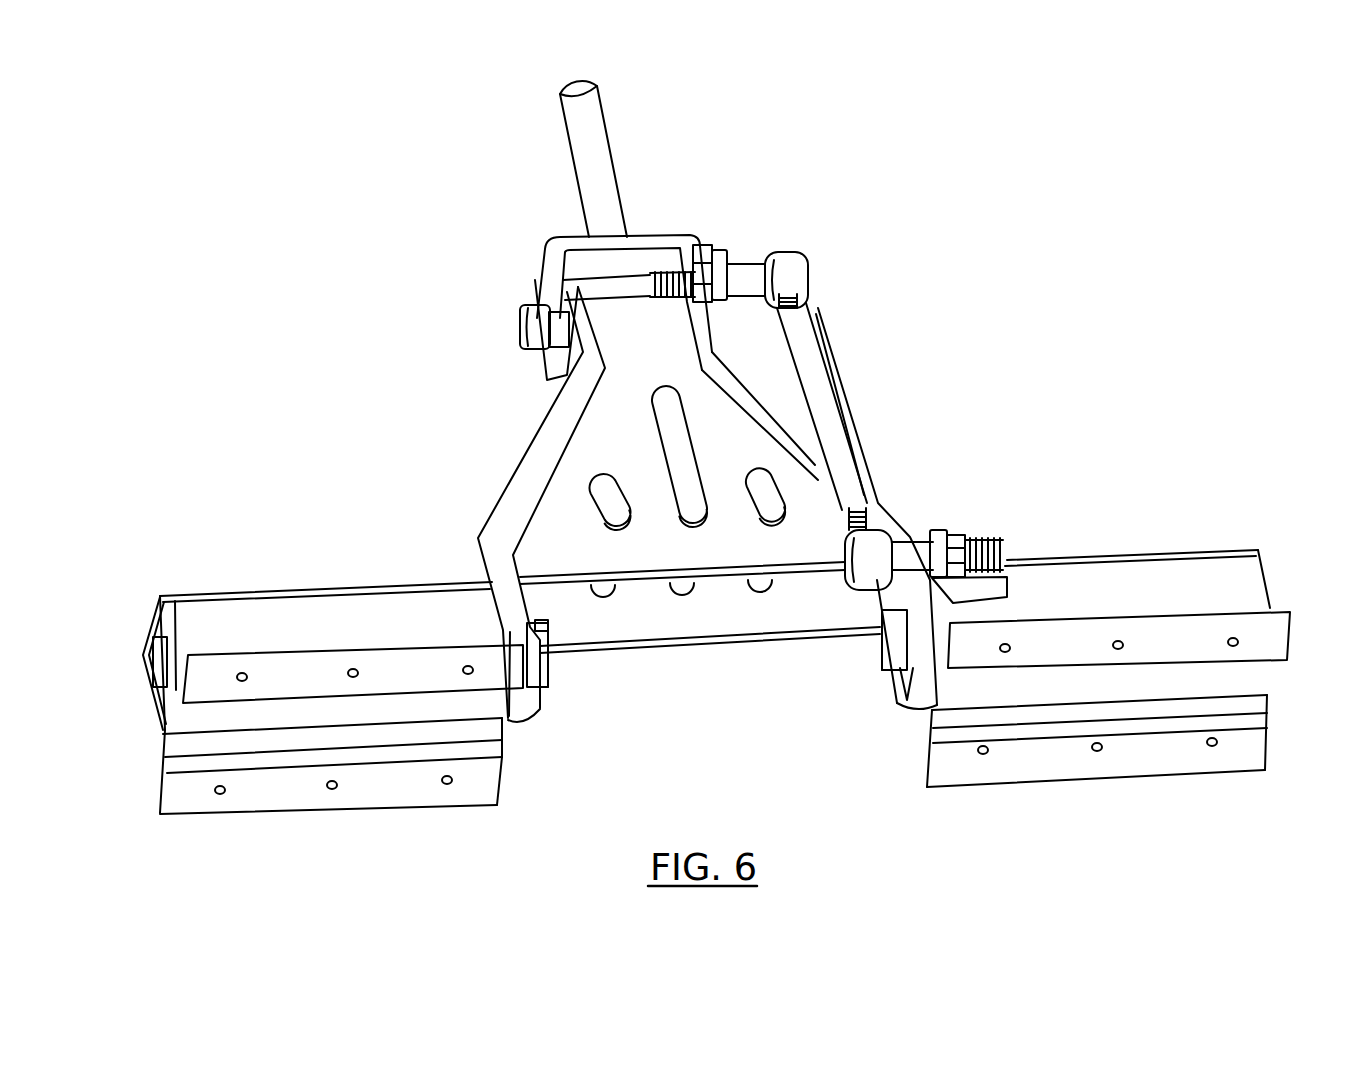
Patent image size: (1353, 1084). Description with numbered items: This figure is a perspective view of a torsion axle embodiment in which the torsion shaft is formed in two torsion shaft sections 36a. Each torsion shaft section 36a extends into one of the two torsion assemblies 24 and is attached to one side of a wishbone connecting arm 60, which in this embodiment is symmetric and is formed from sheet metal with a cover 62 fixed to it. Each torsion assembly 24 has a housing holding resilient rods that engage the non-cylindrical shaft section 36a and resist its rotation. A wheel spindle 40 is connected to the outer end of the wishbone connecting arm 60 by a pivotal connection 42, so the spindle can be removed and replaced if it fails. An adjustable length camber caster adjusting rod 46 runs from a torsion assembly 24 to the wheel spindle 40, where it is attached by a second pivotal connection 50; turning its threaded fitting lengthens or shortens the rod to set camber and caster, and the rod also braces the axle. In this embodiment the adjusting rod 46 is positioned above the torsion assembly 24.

The torsion assembly 24 is at (208, 553).
The torsion shaft section 36a is at (550, 672).
The wheel spindle 40 is at (595, 153).
The pivotal connection 42 is at (520, 326).
The camber caster adjusting rod 46 is at (828, 388).
The second pivotal connection 50 is at (748, 228).
The wishbone connecting arm 60 is at (534, 428).
The cover 62 is at (568, 530).